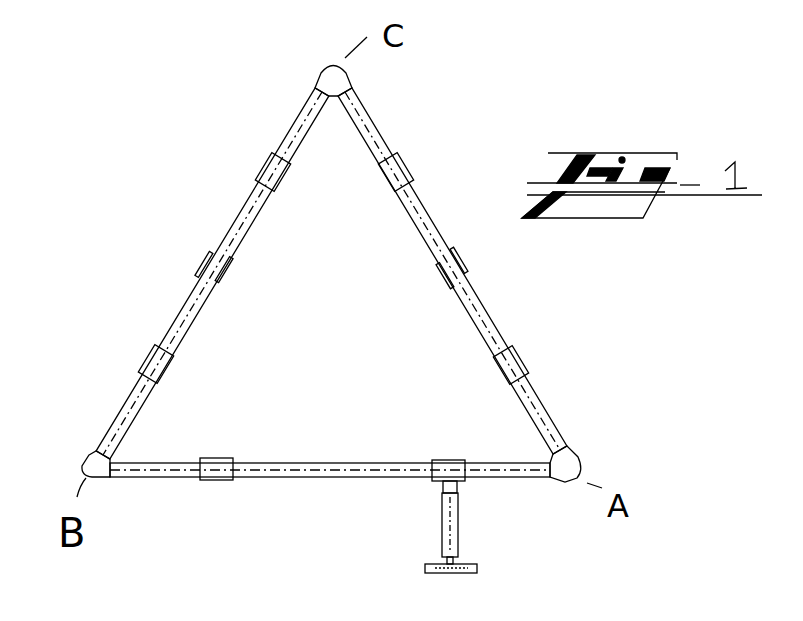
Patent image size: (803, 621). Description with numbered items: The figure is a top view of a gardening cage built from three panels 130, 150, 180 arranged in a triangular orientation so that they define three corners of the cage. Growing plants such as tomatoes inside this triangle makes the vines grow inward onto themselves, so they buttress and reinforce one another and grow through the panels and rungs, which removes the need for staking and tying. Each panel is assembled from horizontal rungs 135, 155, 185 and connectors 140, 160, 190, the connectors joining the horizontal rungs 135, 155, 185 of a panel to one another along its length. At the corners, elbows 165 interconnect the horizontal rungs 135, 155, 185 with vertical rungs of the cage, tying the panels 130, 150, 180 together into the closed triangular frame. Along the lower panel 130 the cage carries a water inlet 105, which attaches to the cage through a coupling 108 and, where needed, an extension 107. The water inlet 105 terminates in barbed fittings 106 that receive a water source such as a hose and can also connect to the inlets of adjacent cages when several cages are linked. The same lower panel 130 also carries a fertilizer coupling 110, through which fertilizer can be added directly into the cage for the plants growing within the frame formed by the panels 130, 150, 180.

The water inlet 105 is at (493, 562).
The barbed fitting 106 is at (428, 574).
The extension 107 is at (445, 520).
The coupling 108 is at (450, 470).
The fertilizer coupling 110 is at (334, 450).
The panel 130 is at (282, 481).
The horizontal rungs 135 is at (158, 478).
The connectors 140 is at (215, 483).
The panel 150 is at (222, 228).
The horizontal rungs 155 is at (298, 117).
The connectors 160 is at (262, 158).
The elbows 165 is at (327, 67).
The panel 180 is at (480, 293).
The horizontal rungs 185 is at (430, 222).
The connectors 190 is at (400, 167).